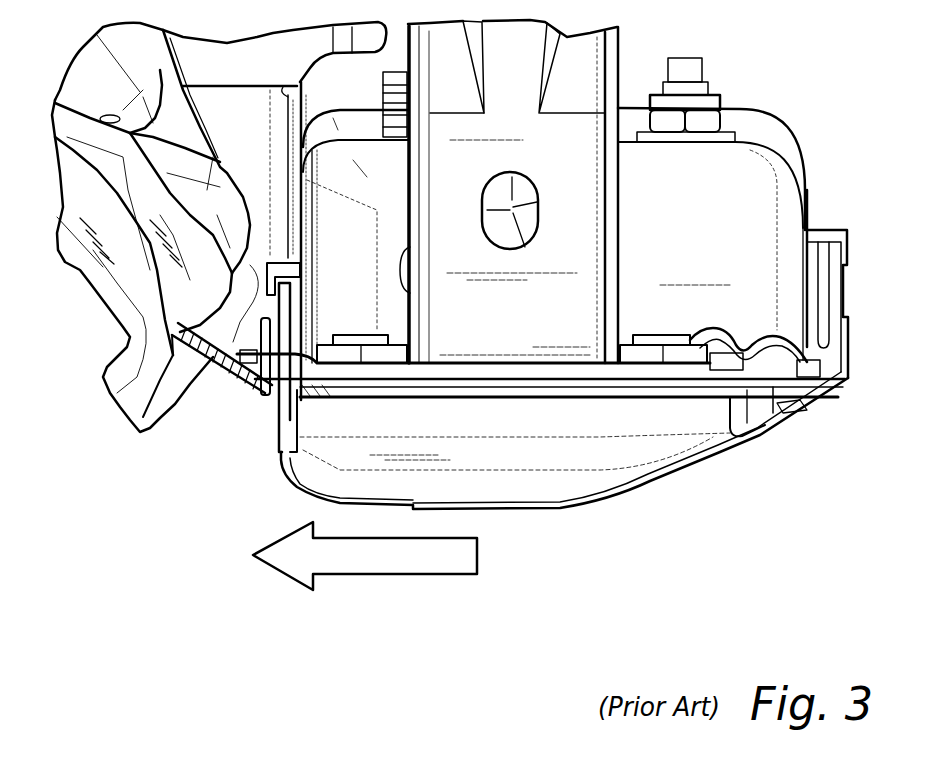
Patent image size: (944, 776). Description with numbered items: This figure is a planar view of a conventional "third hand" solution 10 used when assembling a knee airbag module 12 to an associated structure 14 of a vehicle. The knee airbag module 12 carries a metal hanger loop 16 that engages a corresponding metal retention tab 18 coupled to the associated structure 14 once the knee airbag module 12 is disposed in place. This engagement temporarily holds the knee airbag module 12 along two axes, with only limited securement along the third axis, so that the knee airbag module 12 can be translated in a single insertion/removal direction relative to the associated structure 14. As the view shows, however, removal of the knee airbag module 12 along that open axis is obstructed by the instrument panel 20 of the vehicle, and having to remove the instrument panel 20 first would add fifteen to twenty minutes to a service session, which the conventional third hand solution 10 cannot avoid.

The third hand solution 10 is at (237, 402).
The knee airbag module 12 is at (622, 492).
The associated structure 14 is at (612, 250).
The hanger loop 16 is at (257, 380).
The retention tab 18 is at (233, 380).
The instrument panel 20 is at (83, 250).